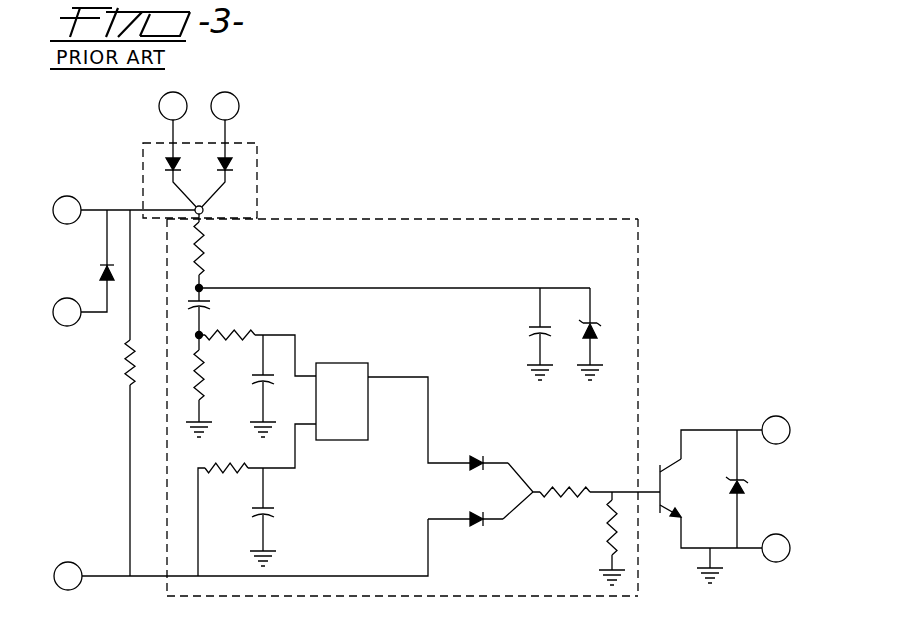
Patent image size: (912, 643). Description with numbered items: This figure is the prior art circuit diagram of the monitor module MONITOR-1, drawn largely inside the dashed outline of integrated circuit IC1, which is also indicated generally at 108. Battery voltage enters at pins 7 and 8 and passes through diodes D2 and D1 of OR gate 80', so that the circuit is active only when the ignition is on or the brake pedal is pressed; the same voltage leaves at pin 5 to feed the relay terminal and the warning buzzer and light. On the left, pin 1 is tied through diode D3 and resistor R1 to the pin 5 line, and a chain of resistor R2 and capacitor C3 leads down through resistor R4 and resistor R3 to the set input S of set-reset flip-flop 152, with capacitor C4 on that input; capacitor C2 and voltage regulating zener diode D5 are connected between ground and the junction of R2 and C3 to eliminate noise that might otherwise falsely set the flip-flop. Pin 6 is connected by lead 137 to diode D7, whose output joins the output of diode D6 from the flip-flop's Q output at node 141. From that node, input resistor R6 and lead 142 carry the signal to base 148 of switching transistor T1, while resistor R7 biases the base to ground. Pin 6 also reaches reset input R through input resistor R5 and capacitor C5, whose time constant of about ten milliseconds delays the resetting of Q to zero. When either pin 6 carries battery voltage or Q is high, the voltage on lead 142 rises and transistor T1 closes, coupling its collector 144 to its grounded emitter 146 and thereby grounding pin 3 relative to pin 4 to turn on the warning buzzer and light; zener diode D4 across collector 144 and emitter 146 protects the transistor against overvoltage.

The pin 1 is at (64, 326).
The pin 3 is at (788, 421).
The pin 4 is at (790, 540).
The pin 5 is at (76, 197).
The pin 6 is at (81, 565).
The pin 7 is at (160, 98).
The pin 8 is at (250, 84).
The OR gate 80' is at (202, 169).
The integrated circuit 108 is at (430, 207).
The integrated circuit IC1 is at (638, 219).
The lead 137 is at (368, 578).
The node 141 is at (535, 497).
The lead 142 is at (624, 491).
The collector 144 is at (681, 461).
The emitter 146 is at (721, 550).
The base 148 is at (664, 478).
The set-reset flip-flop 152 is at (350, 363).
The diode D1 is at (232, 170).
The diode D2 is at (166, 165).
The diode D3 is at (102, 272).
The zener diode D4 is at (748, 480).
The voltage regulating zener diode D5 is at (596, 328).
The diode D6 is at (502, 440).
The diode D7 is at (486, 520).
The resistor R1 is at (126, 350).
The resistor R2 is at (206, 254).
The resistor R3 is at (204, 400).
The resistor R4 is at (252, 332).
The input resistor R5 is at (246, 462).
The input resistor R6 is at (586, 486).
The resistor R7 is at (608, 554).
The capacitor C2 is at (520, 334).
The capacitor C3 is at (202, 296).
The capacitor C4 is at (268, 388).
The capacitor C5 is at (276, 515).
The switching transistor T1 is at (672, 488).